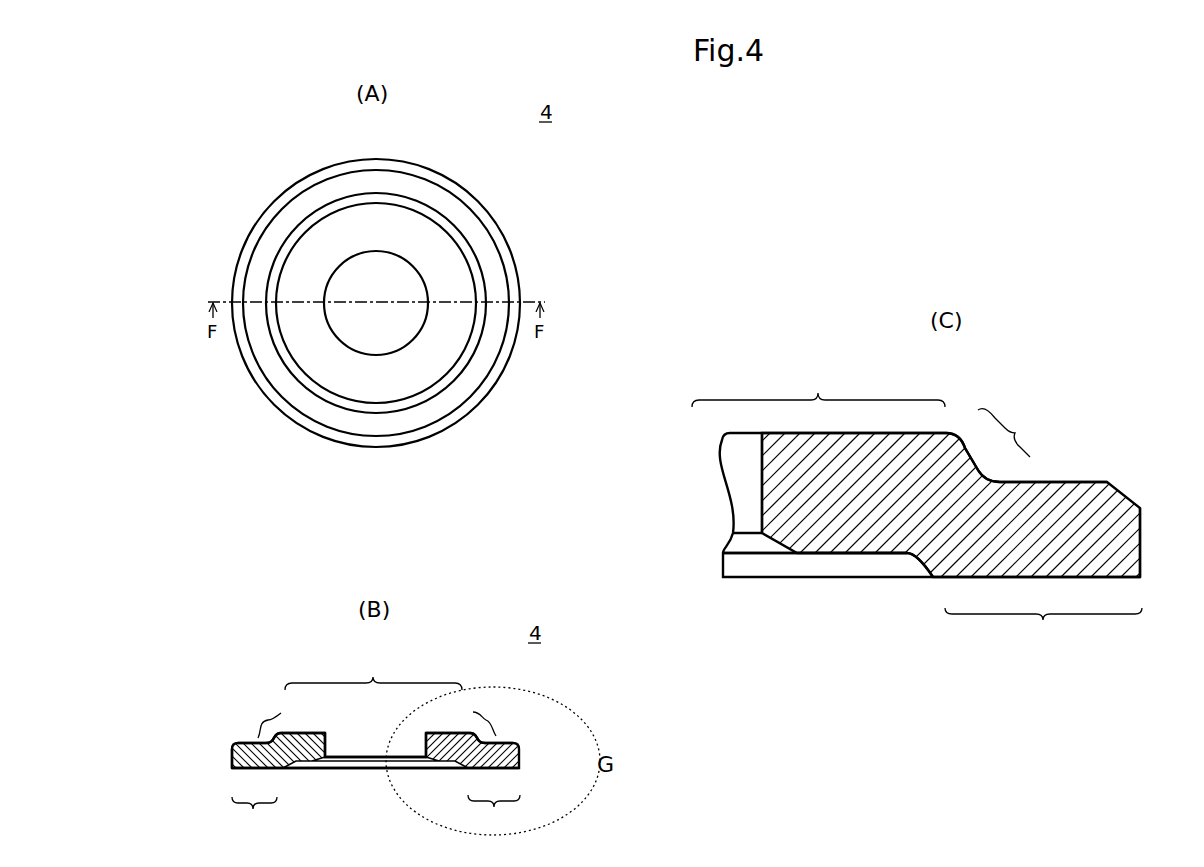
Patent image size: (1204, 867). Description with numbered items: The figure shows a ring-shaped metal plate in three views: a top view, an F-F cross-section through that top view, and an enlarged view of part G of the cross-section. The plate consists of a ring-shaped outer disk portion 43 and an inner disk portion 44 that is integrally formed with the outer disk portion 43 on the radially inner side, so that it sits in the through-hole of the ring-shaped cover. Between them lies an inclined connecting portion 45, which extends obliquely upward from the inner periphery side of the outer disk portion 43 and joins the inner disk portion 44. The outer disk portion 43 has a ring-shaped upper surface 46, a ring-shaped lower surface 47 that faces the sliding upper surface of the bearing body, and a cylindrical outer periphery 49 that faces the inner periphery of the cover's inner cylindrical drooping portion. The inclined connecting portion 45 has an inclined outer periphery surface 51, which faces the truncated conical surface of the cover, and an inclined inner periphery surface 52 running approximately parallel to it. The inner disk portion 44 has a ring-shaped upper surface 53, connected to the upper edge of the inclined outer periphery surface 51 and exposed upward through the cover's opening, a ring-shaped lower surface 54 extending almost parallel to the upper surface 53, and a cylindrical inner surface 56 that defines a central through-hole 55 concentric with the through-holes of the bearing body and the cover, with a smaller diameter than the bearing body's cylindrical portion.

The outer disk portion 43 is at (519, 280).
The inner disk portion 44 is at (459, 248).
The inclined connecting portion 45 is at (483, 265).
The ring-shaped upper surface 46 is at (471, 385).
The ring-shaped lower surface 47 is at (487, 770).
The cylindrical outer periphery 49 is at (440, 171).
The inclined outer periphery surface 51 is at (437, 220).
The inclined inner periphery surface 52 is at (464, 766).
The ring-shaped upper surface 53 is at (322, 358).
The ring-shaped lower surface 54 is at (304, 768).
The through-hole 55 is at (377, 268).
The cylindrical inner surface 56 is at (356, 347).